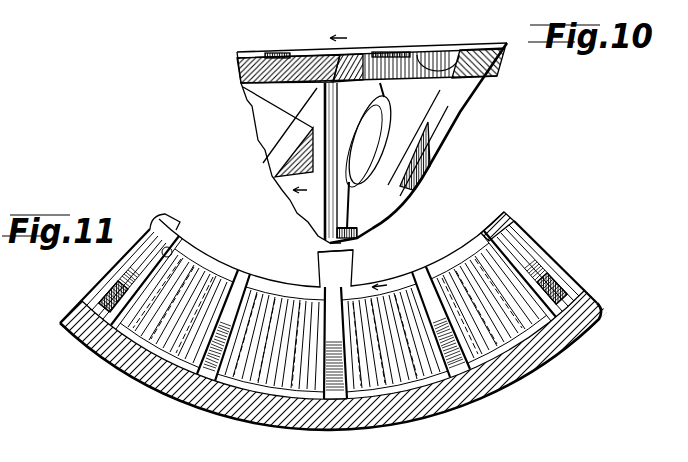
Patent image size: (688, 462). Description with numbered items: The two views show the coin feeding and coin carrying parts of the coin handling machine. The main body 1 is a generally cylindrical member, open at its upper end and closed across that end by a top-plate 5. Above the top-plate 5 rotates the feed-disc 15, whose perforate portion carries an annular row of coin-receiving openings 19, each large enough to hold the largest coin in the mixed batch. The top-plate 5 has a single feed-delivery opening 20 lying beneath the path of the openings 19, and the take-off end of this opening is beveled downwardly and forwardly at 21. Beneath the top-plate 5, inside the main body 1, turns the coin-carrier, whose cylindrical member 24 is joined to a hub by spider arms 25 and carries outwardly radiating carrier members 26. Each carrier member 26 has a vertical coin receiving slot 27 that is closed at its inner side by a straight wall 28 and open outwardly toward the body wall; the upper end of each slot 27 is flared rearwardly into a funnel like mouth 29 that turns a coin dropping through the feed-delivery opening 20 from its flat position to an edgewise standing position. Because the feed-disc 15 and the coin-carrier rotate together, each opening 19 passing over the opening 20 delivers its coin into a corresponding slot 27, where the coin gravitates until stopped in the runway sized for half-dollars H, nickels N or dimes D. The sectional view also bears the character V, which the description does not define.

In FIG. 11, the main body 1 is at (153, 373).
In FIG. 10, the top-plate 5 is at (300, 65).
In FIG. 10, the feed-disc 15 is at (268, 54).
In FIG. 10, the coin-receiving openings 19 is at (357, 52).
In FIG. 10, the feed-delivery opening 20 is at (443, 53).
In FIG. 10, the beveled take-off end 21 is at (460, 50).
In FIG. 11, the cylindrical member 24 is at (200, 257).
In FIG. 11, the spider arms 25 is at (323, 257).
In FIG. 10, the carrier members 26 is at (320, 213).
In FIG. 10, the coin receiving slot 27 is at (365, 235).
In FIG. 11, the coin receiving slot 27 is at (85, 337).
In FIG. 11, the straight wall 28 is at (170, 245).
In FIG. 10, the funnel like mouths 29 is at (340, 123).
In FIG. 11, the funnel like mouths 29 is at (567, 362).
In FIG. 10, the vent opening V is at (372, 92).
In FIG. 10, the half-dollar coins H is at (360, 147).
In FIG. 11, the half-dollar coins H is at (340, 375).
In FIG. 11, the nickels N is at (113, 262).
In FIG. 11, the dimes D is at (228, 325).